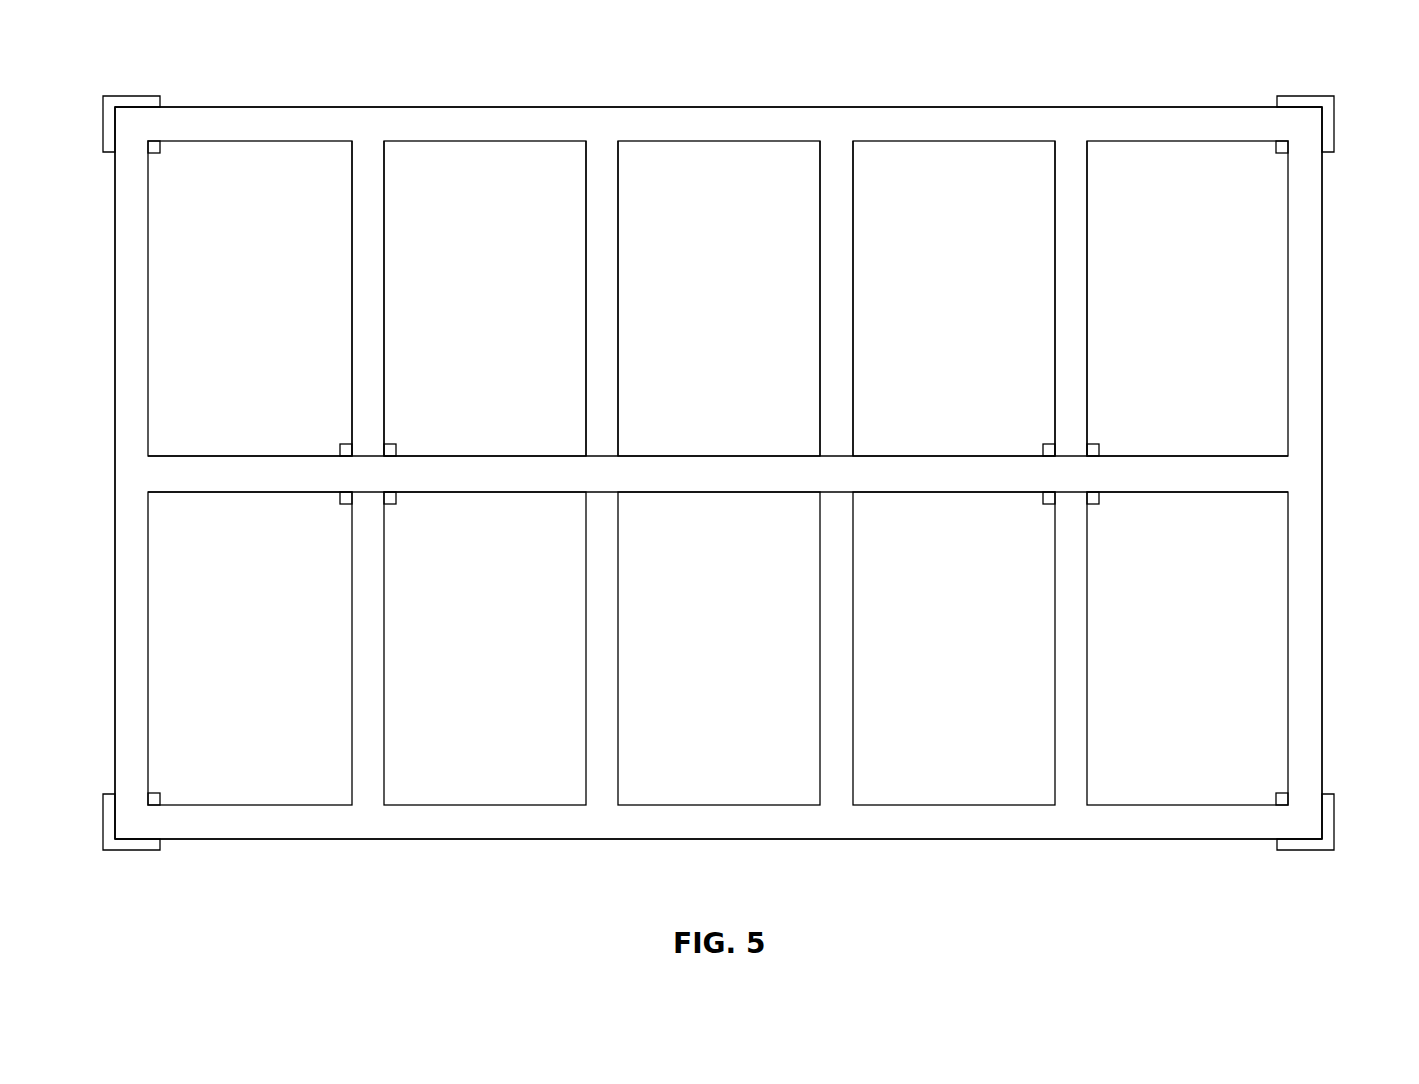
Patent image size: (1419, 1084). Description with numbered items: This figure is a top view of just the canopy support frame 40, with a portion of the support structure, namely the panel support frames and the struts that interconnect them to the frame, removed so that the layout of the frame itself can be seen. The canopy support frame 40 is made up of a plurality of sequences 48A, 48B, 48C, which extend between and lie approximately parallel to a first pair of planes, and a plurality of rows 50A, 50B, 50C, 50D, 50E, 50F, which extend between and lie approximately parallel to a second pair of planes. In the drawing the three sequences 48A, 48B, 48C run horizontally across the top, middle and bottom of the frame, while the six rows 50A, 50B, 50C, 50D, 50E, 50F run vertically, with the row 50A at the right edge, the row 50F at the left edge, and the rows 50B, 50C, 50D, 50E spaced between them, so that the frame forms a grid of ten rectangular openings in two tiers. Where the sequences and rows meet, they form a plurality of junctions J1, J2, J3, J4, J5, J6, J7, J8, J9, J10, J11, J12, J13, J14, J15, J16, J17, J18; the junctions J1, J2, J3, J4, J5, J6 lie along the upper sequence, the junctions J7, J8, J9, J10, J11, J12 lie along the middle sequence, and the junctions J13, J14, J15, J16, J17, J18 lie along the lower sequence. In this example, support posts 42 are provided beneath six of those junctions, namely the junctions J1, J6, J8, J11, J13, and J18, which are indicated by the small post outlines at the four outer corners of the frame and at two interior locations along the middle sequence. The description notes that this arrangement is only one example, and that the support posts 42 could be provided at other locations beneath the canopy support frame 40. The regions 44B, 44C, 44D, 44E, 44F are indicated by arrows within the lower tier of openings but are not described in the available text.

The canopy support frame 40 is at (958, 122).
The support posts 42 is at (103, 125).
The panel 44B is at (1093, 619).
The panel 44C is at (860, 619).
The panel 44D is at (625, 619).
The panel 44E is at (390, 619).
The panel 44F is at (155, 619).
The sequence 48A is at (248, 122).
The sequence 48B is at (263, 473).
The sequence 48C is at (252, 828).
The row 50A is at (1308, 268).
The row 50B is at (1065, 267).
The row 50C is at (830, 267).
The row 50D is at (595, 267).
The row 50E is at (362, 267).
The row 50F is at (130, 267).
The junction J1 is at (1306, 125).
The junction J2 is at (1071, 125).
The junction J3 is at (838, 125).
The junction J4 is at (601, 125).
The junction J5 is at (368, 125).
The junction J6 is at (132, 125).
The junction J7 is at (1300, 470).
The junction J8 is at (1066, 470).
The junction J9 is at (832, 470).
The junction J10 is at (595, 470).
The junction J11 is at (360, 470).
The junction J12 is at (140, 470).
The junction J13 is at (1305, 825).
The junction J14 is at (1070, 818).
The junction J15 is at (834, 815).
The junction J16 is at (600, 815).
The junction J17 is at (367, 817).
The junction J18 is at (133, 823).